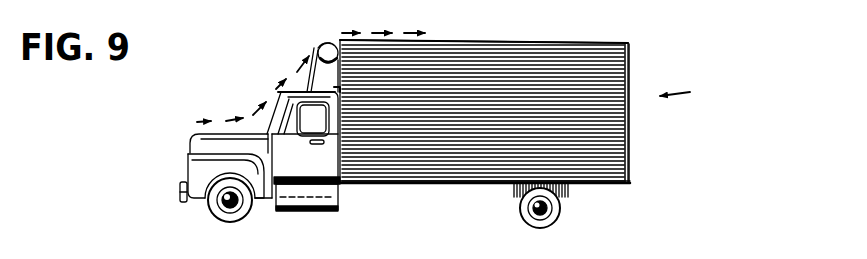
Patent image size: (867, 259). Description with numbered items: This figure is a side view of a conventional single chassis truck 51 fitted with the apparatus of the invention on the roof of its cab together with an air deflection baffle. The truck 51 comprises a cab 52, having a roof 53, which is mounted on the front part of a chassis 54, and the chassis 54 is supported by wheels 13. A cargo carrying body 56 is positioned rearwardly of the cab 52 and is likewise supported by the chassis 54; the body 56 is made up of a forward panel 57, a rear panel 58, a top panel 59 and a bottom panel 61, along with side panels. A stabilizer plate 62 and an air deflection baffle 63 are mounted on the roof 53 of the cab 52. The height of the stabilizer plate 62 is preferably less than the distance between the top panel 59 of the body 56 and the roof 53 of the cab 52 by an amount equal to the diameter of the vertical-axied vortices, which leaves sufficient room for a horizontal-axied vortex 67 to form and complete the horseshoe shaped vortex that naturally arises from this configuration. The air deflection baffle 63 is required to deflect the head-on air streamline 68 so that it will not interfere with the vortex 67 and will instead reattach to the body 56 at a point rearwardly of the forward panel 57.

The wheels 13 is at (238, 215).
The single chassis truck 51 is at (494, 31).
The cab 52 is at (178, 153).
The roof 53 is at (281, 90).
The chassis 54 is at (438, 205).
The cargo carrying body 56 is at (690, 94).
The forward panel 57 is at (339, 90).
The rear panel 58 is at (631, 64).
The top panel 59 is at (556, 42).
The bottom panel 61 is at (457, 184).
The stabilizer plate 62 is at (332, 78).
The air deflection baffle 63 is at (306, 66).
The horizontal-axied vortex 67 is at (323, 44).
The head-on air streamline 68 is at (298, 82).